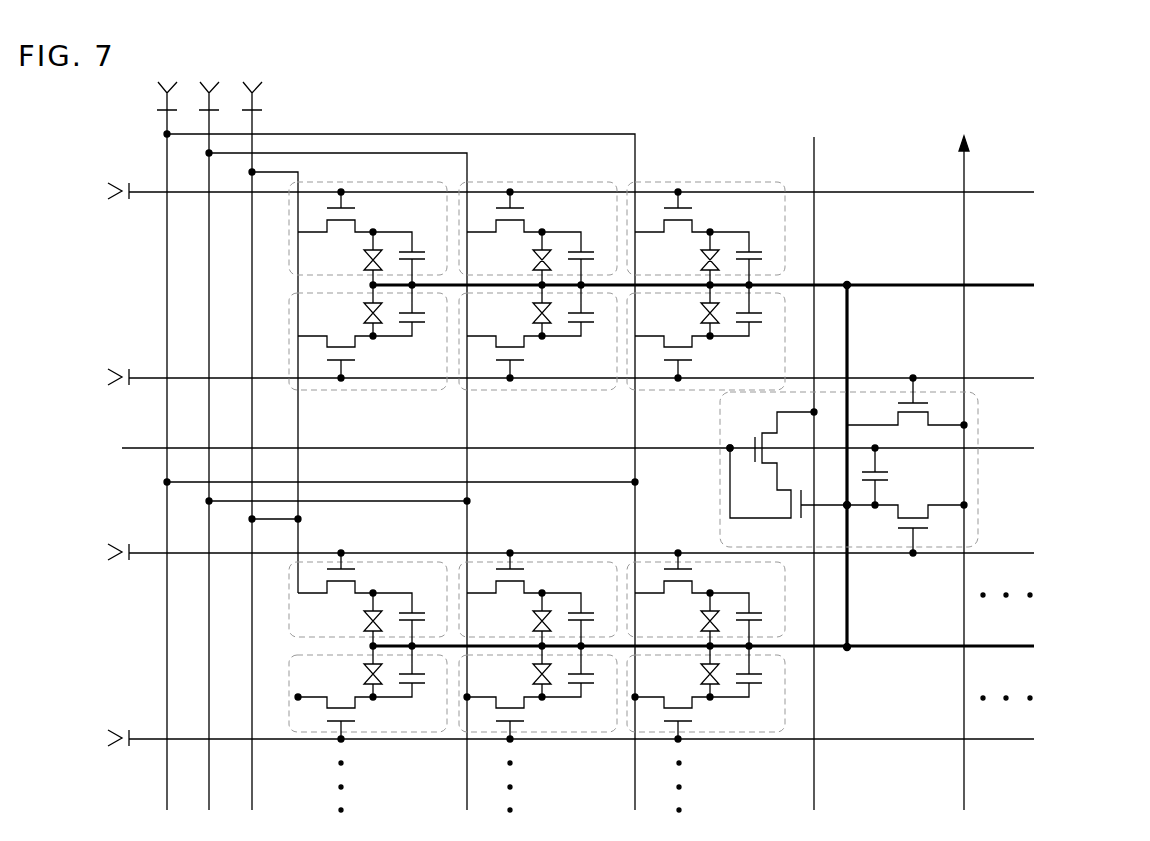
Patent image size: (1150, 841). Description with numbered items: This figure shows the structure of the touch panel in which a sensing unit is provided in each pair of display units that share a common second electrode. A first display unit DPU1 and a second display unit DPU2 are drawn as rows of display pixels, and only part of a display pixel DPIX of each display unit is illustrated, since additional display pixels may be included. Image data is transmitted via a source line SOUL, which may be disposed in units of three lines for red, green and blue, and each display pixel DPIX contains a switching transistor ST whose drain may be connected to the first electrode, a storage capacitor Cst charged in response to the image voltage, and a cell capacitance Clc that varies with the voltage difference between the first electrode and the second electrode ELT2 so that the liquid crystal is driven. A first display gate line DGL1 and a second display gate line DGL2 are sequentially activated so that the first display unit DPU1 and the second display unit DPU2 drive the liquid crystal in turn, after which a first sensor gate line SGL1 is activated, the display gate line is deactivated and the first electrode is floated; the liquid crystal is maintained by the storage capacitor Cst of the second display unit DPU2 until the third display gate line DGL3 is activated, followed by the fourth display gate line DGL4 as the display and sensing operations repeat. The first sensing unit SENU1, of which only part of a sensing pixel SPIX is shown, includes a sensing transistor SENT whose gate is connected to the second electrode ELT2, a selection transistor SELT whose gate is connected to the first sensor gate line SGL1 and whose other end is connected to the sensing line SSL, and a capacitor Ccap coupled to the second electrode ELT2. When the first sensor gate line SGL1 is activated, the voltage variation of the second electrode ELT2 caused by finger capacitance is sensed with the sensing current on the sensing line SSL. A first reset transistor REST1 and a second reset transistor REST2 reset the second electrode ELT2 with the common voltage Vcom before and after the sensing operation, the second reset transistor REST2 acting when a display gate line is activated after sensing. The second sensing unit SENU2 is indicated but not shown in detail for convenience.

The source line SOUL is at (267, 73).
The display pixel DPIX is at (368, 190).
The first display gate line DGL1 is at (541, 191).
The second display gate line DGL2 is at (541, 377).
The third display gate line DGL3 is at (541, 552).
The fourth display gate line DGL4 is at (541, 738).
The first sensor gate line SGL1 is at (549, 447).
The sensing line SSL is at (814, 460).
The common voltage Vcom is at (968, 460).
The first display unit DPU1 is at (709, 190).
The second display unit DPU2 is at (1048, 337).
The second electrode ELT2 is at (729, 462).
The sensing pixel SPIX is at (885, 465).
The first sensing unit SENU1 is at (929, 465).
The second sensing unit SENU2 is at (1043, 781).
The switching transistor ST is at (335, 220).
The storage capacitor Cst is at (359, 258).
The cell capacitance Clc is at (405, 258).
The selection transistor SELT is at (770, 465).
The sensing transistor SENT is at (804, 517).
The first reset transistor REST1 is at (905, 412).
The second reset transistor REST2 is at (905, 521).
The sensing capacitor Ccap is at (894, 478).